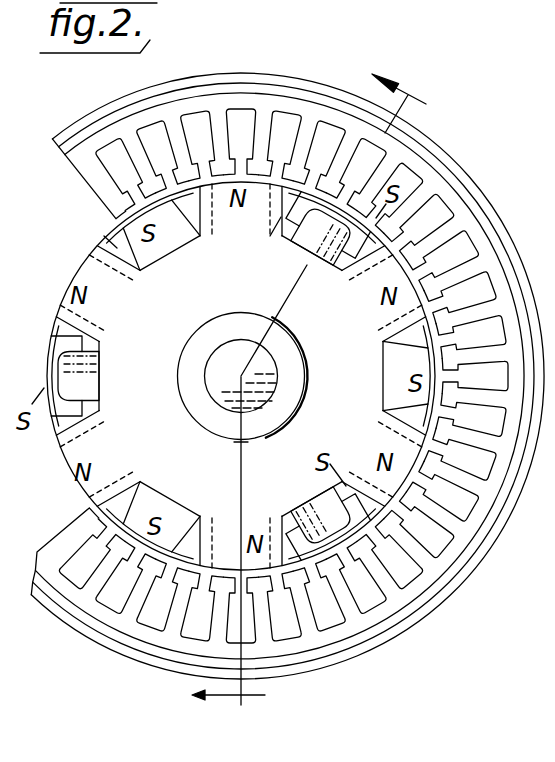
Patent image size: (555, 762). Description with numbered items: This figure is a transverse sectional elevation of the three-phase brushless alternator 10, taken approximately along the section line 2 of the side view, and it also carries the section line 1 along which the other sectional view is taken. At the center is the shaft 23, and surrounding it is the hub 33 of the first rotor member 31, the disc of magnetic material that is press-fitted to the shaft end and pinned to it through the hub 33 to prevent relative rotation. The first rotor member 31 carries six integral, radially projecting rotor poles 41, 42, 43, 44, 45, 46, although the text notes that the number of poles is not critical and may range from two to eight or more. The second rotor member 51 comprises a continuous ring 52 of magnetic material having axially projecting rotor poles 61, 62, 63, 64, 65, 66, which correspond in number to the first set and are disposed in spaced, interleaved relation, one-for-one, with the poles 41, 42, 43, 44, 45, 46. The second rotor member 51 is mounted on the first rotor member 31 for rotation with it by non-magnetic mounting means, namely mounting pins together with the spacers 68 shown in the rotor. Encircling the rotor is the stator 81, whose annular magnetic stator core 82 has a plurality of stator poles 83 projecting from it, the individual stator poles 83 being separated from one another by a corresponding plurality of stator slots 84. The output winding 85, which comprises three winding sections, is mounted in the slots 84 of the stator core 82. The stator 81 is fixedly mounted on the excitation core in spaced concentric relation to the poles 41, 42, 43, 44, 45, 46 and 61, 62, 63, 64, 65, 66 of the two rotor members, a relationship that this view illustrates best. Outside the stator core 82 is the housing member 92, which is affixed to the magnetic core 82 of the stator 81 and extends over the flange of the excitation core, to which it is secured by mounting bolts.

The section line 1- 1 is at (317, 397).
The section line 2- 2 is at (253, 25).
The alternator 10 is at (470, 146).
The shaft 23 is at (240, 378).
The first rotor member 31 is at (277, 474).
The hub 33 is at (307, 364).
The rotor pole 41 is at (232, 238).
The rotor pole 42 is at (372, 332).
The rotor pole 43 is at (378, 442).
The rotor pole 44 is at (224, 530).
The rotor pole 45 is at (113, 458).
The rotor pole 46 is at (108, 307).
The second rotor member 51 is at (268, 240).
The continuous ring 52 is at (108, 240).
The rotor pole 61 is at (342, 272).
The rotor pole 62 is at (405, 358).
The rotor pole 63 is at (284, 505).
The rotor pole 64 is at (140, 503).
The rotor pole 65 is at (80, 404).
The rotor pole 66 is at (142, 262).
The spacer 68 is at (315, 244).
The stator 81 is at (313, 0).
The stator core 82 is at (398, 656).
The stator pole 83 is at (415, 255).
The stator slot 84 is at (440, 292).
The output winding 85 is at (482, 6).
The housing member 92 is at (452, 621).